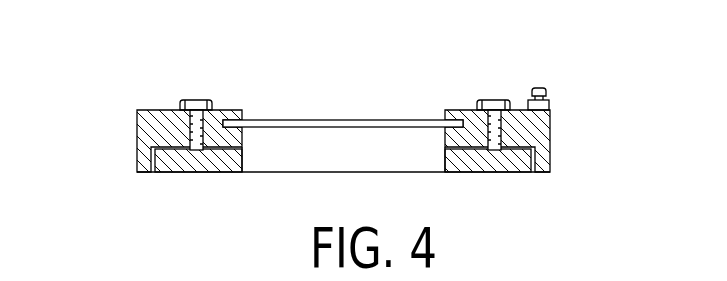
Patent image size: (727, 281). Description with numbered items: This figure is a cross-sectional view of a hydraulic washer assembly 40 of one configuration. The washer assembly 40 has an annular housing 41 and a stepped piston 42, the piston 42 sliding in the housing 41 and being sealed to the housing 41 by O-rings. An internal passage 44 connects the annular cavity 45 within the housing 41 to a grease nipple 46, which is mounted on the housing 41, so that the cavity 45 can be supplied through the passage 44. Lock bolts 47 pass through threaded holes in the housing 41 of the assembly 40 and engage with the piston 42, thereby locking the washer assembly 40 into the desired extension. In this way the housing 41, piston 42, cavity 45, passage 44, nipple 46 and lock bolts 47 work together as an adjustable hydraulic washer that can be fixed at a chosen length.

The washer assembly 40 is at (350, 104).
The annular housing 41 is at (137, 120).
The stepped piston 42 is at (157, 157).
The internal passage 44 is at (553, 143).
The annular cavity 45 is at (531, 156).
The grease nipple 46 is at (547, 100).
The lock bolt 47 is at (203, 100).